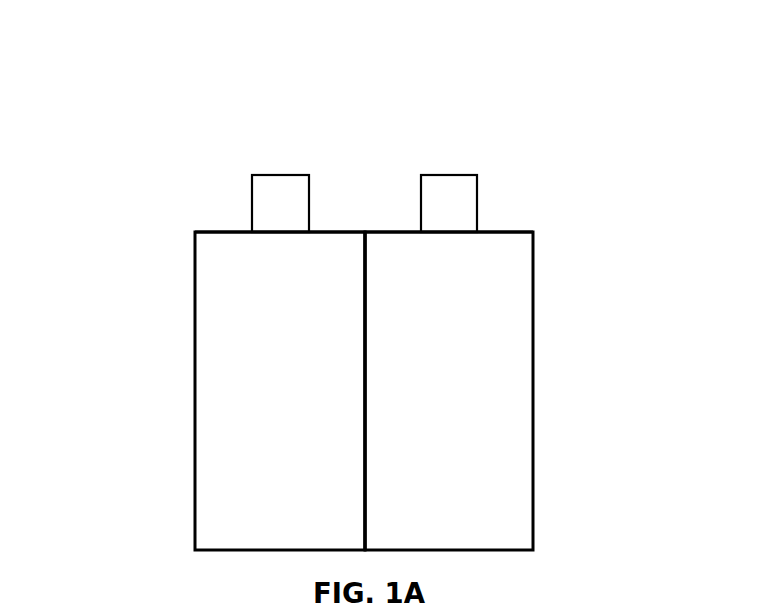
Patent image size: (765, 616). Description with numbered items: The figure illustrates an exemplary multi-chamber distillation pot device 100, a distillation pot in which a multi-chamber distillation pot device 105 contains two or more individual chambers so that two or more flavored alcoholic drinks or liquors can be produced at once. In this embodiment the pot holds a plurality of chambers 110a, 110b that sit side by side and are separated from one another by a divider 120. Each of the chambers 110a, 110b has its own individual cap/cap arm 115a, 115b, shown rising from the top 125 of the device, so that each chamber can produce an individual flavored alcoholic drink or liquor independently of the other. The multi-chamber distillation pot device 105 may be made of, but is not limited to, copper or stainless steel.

The multi-chamber distillation pot device 100 is at (359, 100).
The multi-chamber distillation pot device 105 is at (158, 231).
The chamber 110a is at (244, 394).
The chamber 110b is at (460, 394).
The cap/cap arm 115a is at (265, 198).
The cap/cap arm 115b is at (465, 196).
The divider 120 is at (368, 223).
The top 125 is at (514, 224).